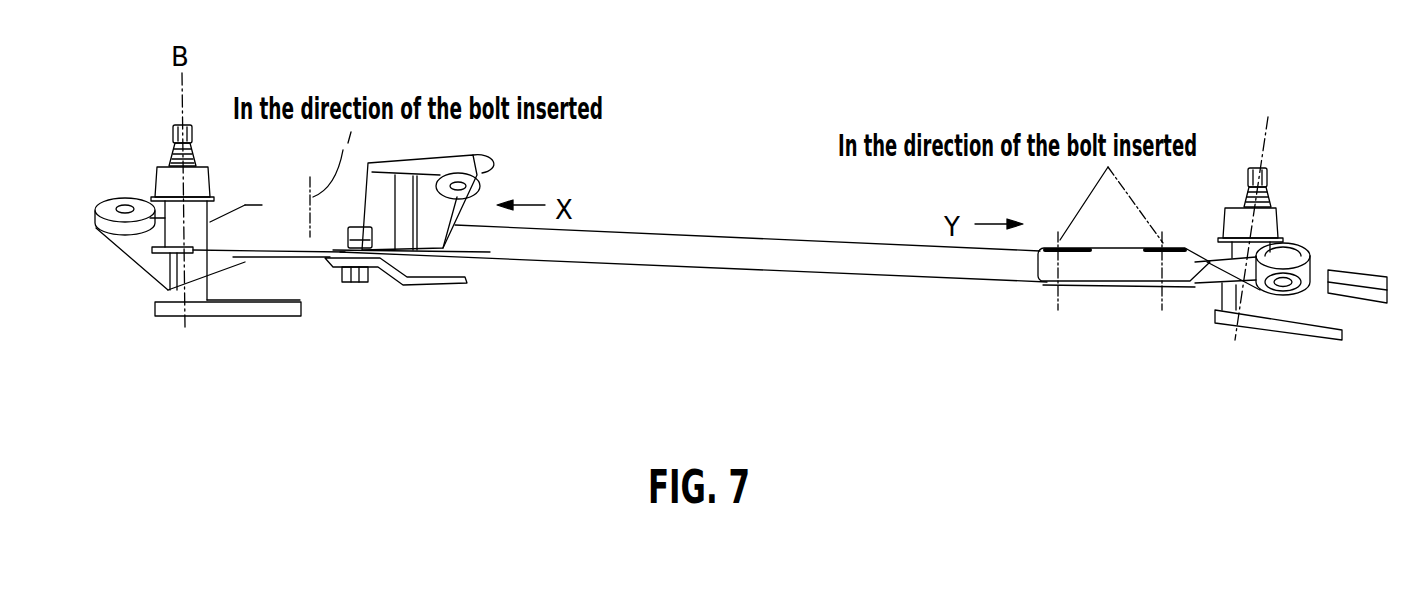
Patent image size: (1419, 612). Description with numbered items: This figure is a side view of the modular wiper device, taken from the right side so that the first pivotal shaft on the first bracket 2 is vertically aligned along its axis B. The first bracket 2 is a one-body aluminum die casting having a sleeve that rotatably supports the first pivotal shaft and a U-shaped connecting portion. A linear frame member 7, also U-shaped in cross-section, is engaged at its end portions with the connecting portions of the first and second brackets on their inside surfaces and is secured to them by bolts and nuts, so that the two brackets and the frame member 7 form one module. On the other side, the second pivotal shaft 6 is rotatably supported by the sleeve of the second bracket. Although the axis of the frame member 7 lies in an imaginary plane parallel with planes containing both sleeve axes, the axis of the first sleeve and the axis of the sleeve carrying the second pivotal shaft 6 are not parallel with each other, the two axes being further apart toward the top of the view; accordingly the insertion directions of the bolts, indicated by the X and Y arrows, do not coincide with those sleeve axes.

The first bracket 2 is at (325, 237).
The second pivotal shaft 6 is at (1262, 173).
The frame member 7 is at (782, 263).